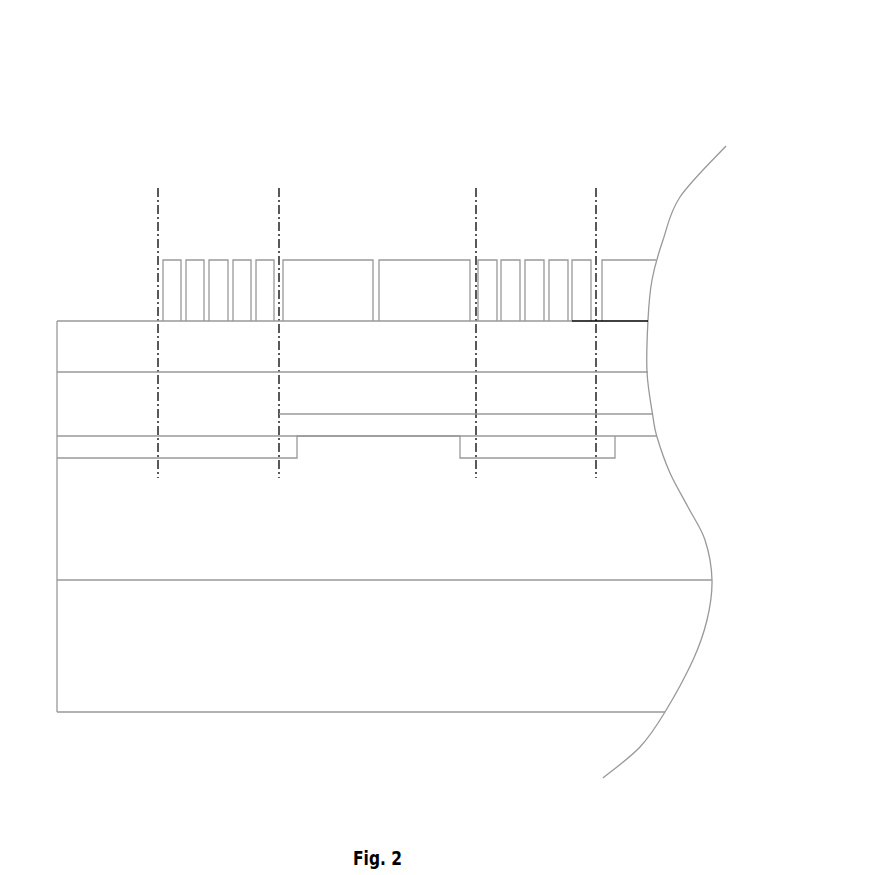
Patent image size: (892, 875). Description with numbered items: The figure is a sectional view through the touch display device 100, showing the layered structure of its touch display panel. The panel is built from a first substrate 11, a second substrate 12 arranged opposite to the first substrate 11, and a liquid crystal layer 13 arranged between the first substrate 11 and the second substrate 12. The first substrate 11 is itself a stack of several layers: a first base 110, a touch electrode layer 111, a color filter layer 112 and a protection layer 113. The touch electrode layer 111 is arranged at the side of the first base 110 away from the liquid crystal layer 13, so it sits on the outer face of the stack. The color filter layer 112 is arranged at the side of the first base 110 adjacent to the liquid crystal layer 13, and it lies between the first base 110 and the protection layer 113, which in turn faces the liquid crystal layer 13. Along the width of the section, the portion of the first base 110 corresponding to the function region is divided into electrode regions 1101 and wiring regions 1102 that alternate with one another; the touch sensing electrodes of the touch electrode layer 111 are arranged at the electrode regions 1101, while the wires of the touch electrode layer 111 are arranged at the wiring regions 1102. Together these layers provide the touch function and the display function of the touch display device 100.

The touch display device 100 is at (403, 32).
The first substrate 11 is at (740, 256).
The first base 110 is at (635, 360).
The touch electrode layer 111 is at (635, 308).
The color filter layer 112 is at (635, 402).
The protection layer 113 is at (652, 432).
The electrode regions 1101 is at (474, 181).
The wiring regions 1102 is at (279, 181).
The second substrate 12 is at (669, 658).
The liquid crystal layer 13 is at (655, 523).